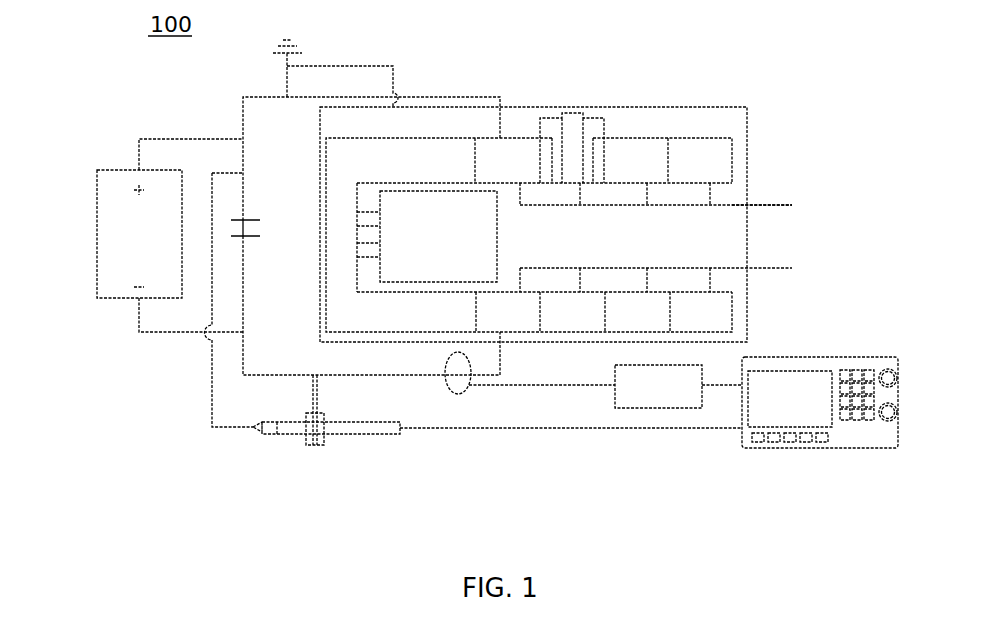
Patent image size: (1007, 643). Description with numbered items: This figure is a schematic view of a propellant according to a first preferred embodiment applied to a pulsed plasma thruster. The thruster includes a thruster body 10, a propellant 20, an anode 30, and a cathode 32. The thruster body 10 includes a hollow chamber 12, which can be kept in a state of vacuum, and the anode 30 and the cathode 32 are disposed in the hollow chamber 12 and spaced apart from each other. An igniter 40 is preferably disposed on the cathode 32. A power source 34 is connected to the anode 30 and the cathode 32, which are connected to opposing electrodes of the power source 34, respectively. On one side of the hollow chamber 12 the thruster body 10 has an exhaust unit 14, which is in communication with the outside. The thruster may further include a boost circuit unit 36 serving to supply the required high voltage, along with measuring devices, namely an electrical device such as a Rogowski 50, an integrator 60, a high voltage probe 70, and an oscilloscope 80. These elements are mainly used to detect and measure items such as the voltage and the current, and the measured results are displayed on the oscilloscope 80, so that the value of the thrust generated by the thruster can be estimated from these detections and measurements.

The thruster body 10 is at (720, 115).
The hollow chamber 12 is at (678, 226).
The exhaust unit 14 is at (770, 200).
The propellant 20 is at (418, 213).
The anode 30 is at (765, 270).
The cathode 32 is at (785, 205).
The power source 34 is at (105, 222).
The boost circuit unit 36 is at (238, 186).
The igniter 40 is at (578, 113).
The Rogowski 50 is at (457, 396).
The integrator 60 is at (646, 408).
The high voltage probe 70 is at (296, 433).
The oscilloscope 80 is at (866, 358).